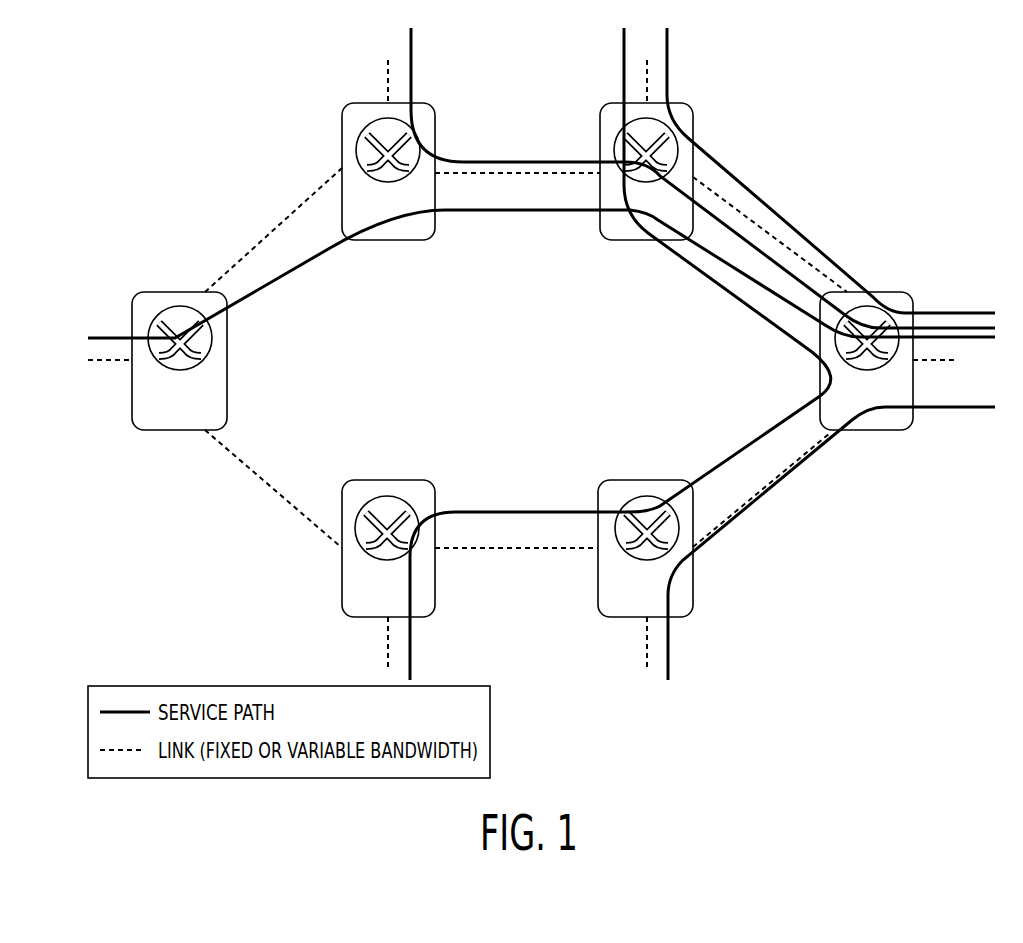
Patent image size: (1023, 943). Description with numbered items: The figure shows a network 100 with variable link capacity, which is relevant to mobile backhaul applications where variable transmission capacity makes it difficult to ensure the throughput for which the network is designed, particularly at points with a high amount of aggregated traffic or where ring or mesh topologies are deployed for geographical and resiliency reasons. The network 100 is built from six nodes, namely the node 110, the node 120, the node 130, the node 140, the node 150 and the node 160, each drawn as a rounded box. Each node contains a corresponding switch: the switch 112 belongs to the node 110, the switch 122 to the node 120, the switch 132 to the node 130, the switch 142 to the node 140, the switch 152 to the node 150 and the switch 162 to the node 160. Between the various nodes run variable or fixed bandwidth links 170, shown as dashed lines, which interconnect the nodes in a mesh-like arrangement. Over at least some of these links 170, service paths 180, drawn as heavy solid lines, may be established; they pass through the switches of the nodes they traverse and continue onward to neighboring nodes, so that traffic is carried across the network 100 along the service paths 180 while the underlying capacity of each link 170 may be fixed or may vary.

The network 100 is at (155, 138).
The node 110 is at (342, 131).
The switch 112 is at (358, 163).
The node 120 is at (600, 131).
The switch 122 is at (677, 133).
The node 130 is at (132, 313).
The switch 132 is at (151, 356).
The node 140 is at (819, 374).
The switch 142 is at (892, 360).
The node 150 is at (342, 592).
The switch 152 is at (412, 551).
The node 160 is at (598, 592).
The switch 162 is at (672, 548).
The variable or fixed bandwidth link 170 is at (757, 224).
The service path 180 is at (846, 276).